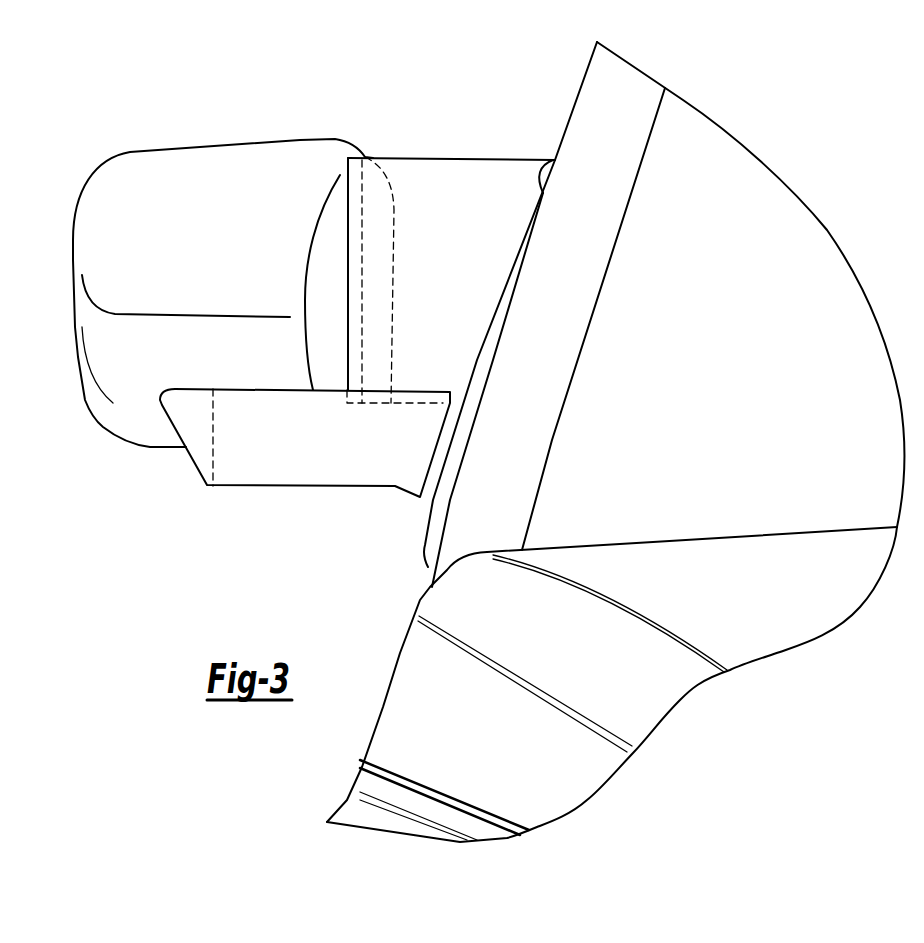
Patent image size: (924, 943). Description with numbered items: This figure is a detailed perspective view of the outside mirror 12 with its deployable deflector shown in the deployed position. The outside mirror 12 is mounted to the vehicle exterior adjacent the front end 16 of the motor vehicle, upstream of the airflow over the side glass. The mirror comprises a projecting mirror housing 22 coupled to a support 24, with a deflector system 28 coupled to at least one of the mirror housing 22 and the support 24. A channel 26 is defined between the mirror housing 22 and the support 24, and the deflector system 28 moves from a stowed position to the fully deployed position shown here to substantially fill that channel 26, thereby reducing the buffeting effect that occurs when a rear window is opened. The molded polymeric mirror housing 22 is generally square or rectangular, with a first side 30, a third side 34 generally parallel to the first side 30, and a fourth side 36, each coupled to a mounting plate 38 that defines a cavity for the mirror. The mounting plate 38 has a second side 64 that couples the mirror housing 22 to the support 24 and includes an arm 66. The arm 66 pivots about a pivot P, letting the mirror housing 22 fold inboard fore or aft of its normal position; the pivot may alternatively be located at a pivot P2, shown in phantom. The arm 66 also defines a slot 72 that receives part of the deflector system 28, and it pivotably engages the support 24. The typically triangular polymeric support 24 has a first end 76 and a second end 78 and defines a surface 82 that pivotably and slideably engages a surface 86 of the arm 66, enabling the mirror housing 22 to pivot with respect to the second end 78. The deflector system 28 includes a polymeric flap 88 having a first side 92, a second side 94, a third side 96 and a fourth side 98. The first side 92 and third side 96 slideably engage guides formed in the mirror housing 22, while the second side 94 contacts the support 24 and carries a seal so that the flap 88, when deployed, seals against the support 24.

The outside mirror 12 is at (488, 94).
The front end 16 is at (863, 573).
The mirror housing 22 is at (275, 124).
The support 24 is at (418, 569).
The channel 26 is at (383, 140).
The deflector system 28 is at (438, 147).
The first side 30 is at (168, 148).
The third side 34 is at (158, 450).
The fourth side 36 is at (72, 287).
The mounting plate 38 is at (72, 258).
The second side 64 is at (165, 260).
The arm 66 is at (245, 488).
The slot 72 is at (370, 405).
The first end 76 is at (598, 42).
The second end 78 is at (427, 588).
The surface 82 is at (462, 425).
The surface 86 is at (448, 477).
The flap 88 is at (453, 258).
The first side 92 is at (462, 158).
The second side 94 is at (541, 165).
The third side 96 is at (422, 392).
The fourth side 98 is at (350, 327).
The pivot P is at (430, 470).
The pivot P2 is at (213, 450).